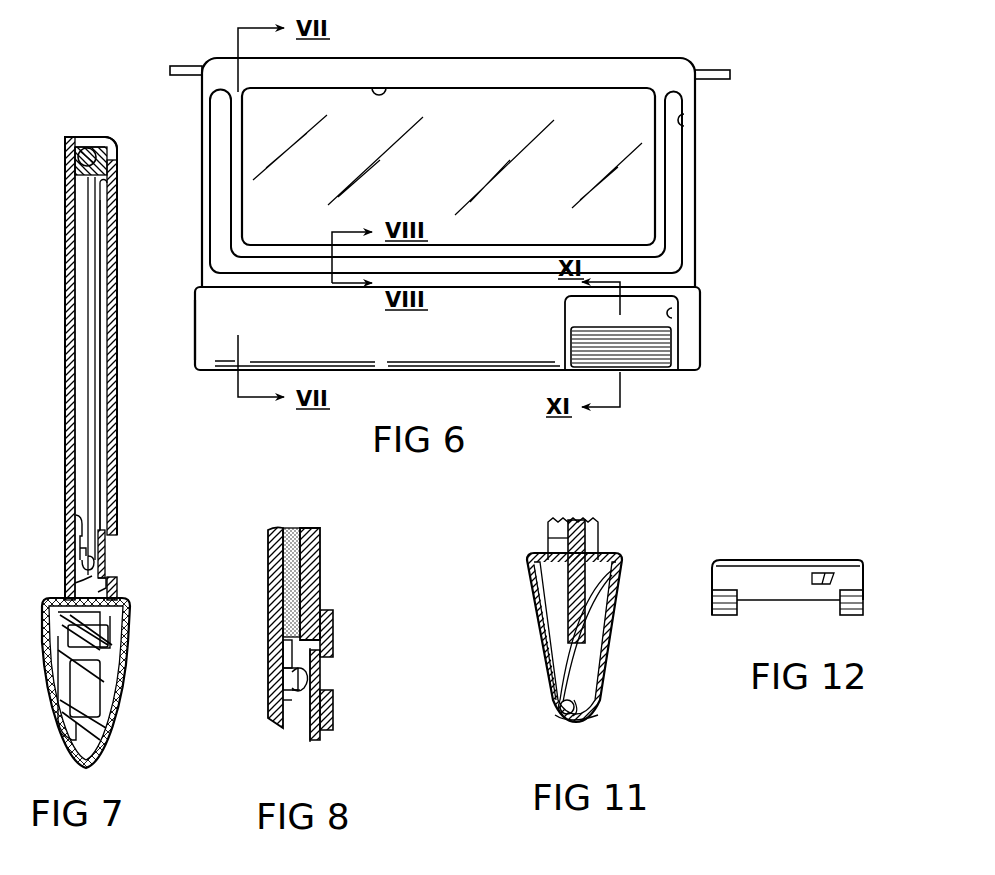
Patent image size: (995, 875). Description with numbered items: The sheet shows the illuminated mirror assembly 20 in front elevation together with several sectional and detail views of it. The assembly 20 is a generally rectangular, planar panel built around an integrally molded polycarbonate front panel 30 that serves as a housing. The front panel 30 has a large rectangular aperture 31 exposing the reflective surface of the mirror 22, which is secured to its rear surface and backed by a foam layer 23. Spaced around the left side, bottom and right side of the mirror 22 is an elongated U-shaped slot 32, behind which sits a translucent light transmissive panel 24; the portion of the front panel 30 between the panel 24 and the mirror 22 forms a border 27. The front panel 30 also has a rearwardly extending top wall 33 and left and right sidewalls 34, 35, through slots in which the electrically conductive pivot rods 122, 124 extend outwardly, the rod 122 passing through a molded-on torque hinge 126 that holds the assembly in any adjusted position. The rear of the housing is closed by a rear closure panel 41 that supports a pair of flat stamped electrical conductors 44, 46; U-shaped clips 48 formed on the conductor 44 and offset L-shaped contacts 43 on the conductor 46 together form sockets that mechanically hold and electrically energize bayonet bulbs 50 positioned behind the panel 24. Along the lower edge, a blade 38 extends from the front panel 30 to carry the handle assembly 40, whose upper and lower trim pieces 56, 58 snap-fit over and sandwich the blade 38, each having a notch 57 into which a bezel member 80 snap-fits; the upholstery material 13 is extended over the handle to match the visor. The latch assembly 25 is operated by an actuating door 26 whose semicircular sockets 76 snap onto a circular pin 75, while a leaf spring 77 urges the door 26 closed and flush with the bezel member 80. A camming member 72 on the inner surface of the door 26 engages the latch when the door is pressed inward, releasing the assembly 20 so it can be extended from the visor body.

In FIG. 6, the upholstery material 13 is at (448, 347).
In FIG. 7, the upholstery material 13 is at (120, 735).
In FIG. 6, the illuminated mirror assembly 20 is at (710, 258).
In FIG. 6, the mirror 22 is at (458, 167).
In FIG. 7, the mirror 22 is at (104, 490).
In FIG. 8, the mirror 22 is at (322, 562).
In FIG. 7, the foam layer 23 is at (95, 300).
In FIG. 8, the foam layer 23 is at (291, 527).
In FIG. 6, the light transmissive panel 24 is at (674, 153).
In FIG. 7, the light transmissive panel 24 is at (106, 551).
In FIG. 8, the light transmissive panel 24 is at (321, 679).
In FIG. 6, the latch assembly 25 is at (657, 372).
In FIG. 6, the actuating door 26 is at (600, 317).
In FIG. 11, the actuating door 26 is at (537, 645).
In FIG. 12, the actuating door 26 is at (782, 559).
In FIG. 6, the border 27 is at (238, 212).
In FIG. 7, the border 27 is at (112, 389).
In FIG. 8, the border 27 is at (330, 632).
In FIG. 6, the front panel 30 is at (575, 78).
In FIG. 8, the front panel 30 is at (333, 722).
In FIG. 11, the front panel 30 is at (643, 873).
In FIG. 6, the rectangular aperture 31 is at (381, 88).
In FIG. 6, the U-shaped slot 32 is at (682, 122).
In FIG. 7, the U-shaped slot 32 is at (118, 582).
In FIG. 6, the top wall 33 is at (452, 60).
In FIG. 7, the top wall 33 is at (70, 137).
In FIG. 6, the left sidewall 34 is at (201, 158).
In FIG. 6, the right sidewall 35 is at (696, 212).
In FIG. 7, the blade 38 is at (94, 685).
In FIG. 11, the blade 38 is at (590, 580).
In FIG. 6, the handle assembly 40 is at (201, 370).
In FIG. 7, the rear closure panel 41 is at (66, 385).
In FIG. 8, the rear closure panel 41 is at (268, 563).
In FIG. 7, the L-shaped electrical contact 43 is at (80, 567).
In FIG. 8, the L-shaped electrical contact 43 is at (288, 694).
In FIG. 7, the electrical conductor 44 is at (72, 552).
In FIG. 8, the electrical conductor 44 is at (282, 673).
In FIG. 7, the electrical conductor 46 is at (76, 515).
In FIG. 8, the electrical conductor 46 is at (282, 642).
In FIG. 7, the U-shaped clip 48 is at (75, 583).
In FIG. 8, the U-shaped clip 48 is at (299, 694).
In FIG. 7, the bayonet bulb 50 is at (106, 578).
In FIG. 8, the bayonet bulb 50 is at (306, 682).
In FIG. 6, the upper trim piece 56 is at (381, 356).
In FIG. 7, the upper trim piece 56 is at (112, 650).
In FIG. 6, the notch 57 is at (674, 314).
In FIG. 7, the lower trim piece 58 is at (66, 655).
In FIG. 12, the camming member 72 is at (836, 579).
In FIG. 11, the circular pin 75 is at (557, 720).
In FIG. 11, the semicircular socket 76 is at (580, 706).
In FIG. 12, the semicircular socket 76 is at (724, 614).
In FIG. 11, the leaf spring 77 is at (565, 660).
In FIG. 11, the bezel member 80 is at (618, 619).
In FIG. 6, the pivot rod 122 is at (180, 66).
In FIG. 7, the pivot rod 122 is at (88, 148).
In FIG. 6, the pivot rod 124 is at (720, 72).
In FIG. 7, the torque hinge 126 is at (112, 140).